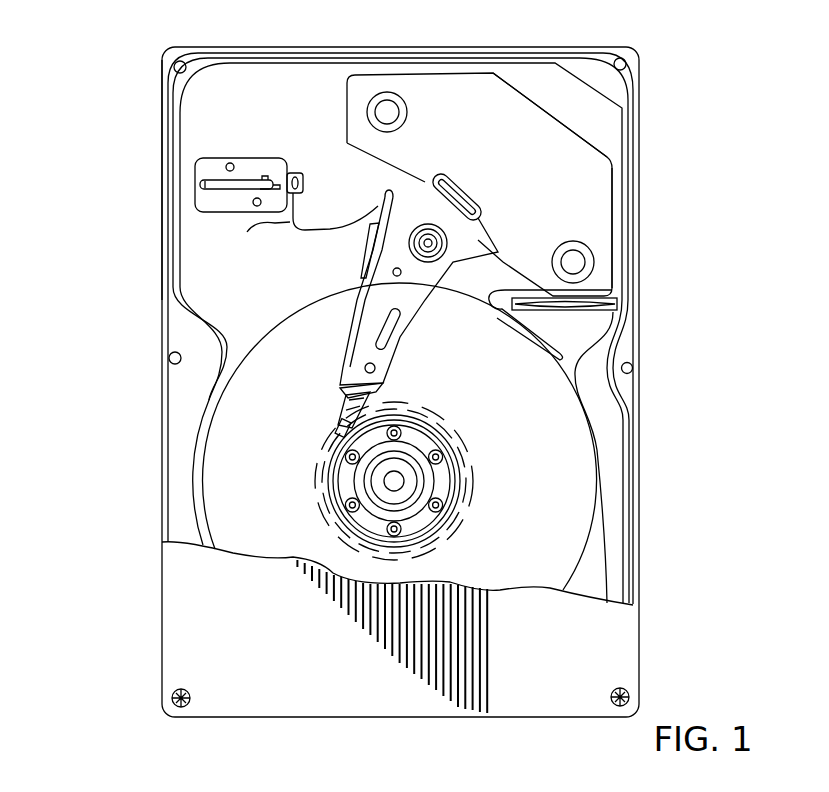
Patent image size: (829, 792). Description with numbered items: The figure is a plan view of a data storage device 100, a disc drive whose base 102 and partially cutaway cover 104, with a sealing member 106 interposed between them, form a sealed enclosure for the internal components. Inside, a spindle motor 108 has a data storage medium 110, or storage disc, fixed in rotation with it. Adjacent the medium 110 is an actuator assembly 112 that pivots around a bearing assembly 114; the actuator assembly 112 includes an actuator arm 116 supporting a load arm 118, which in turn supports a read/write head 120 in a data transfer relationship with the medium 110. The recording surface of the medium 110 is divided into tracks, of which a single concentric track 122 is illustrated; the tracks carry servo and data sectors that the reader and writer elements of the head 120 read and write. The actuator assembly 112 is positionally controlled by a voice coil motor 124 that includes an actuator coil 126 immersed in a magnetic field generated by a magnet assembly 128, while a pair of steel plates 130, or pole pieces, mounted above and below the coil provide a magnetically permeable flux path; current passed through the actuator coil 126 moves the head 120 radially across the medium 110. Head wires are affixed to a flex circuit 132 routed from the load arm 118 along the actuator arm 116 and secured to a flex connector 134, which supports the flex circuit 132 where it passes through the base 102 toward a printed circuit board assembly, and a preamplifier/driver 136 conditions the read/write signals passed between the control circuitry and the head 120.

The data storage device 100 is at (131, 46).
The base 102 is at (185, 85).
The cover 104 is at (200, 569).
The sealing member 106 is at (240, 113).
The spindle motor 108 is at (433, 434).
The data storage medium 110 is at (596, 509).
The actuator assembly 112 is at (427, 322).
The bearing assembly 114 is at (462, 238).
The actuator arm 116 is at (386, 374).
The load arm 118 is at (350, 403).
The read/write head 120 is at (337, 425).
The track 122 is at (471, 477).
The voice coil motor 124 is at (603, 137).
The actuator coil 126 is at (418, 184).
The magnet assembly 128 is at (477, 93).
The steel plate 130 is at (590, 202).
The flex circuit 132 is at (253, 224).
The flex connector 134 is at (198, 192).
The preamplifier/driver 136 is at (365, 240).